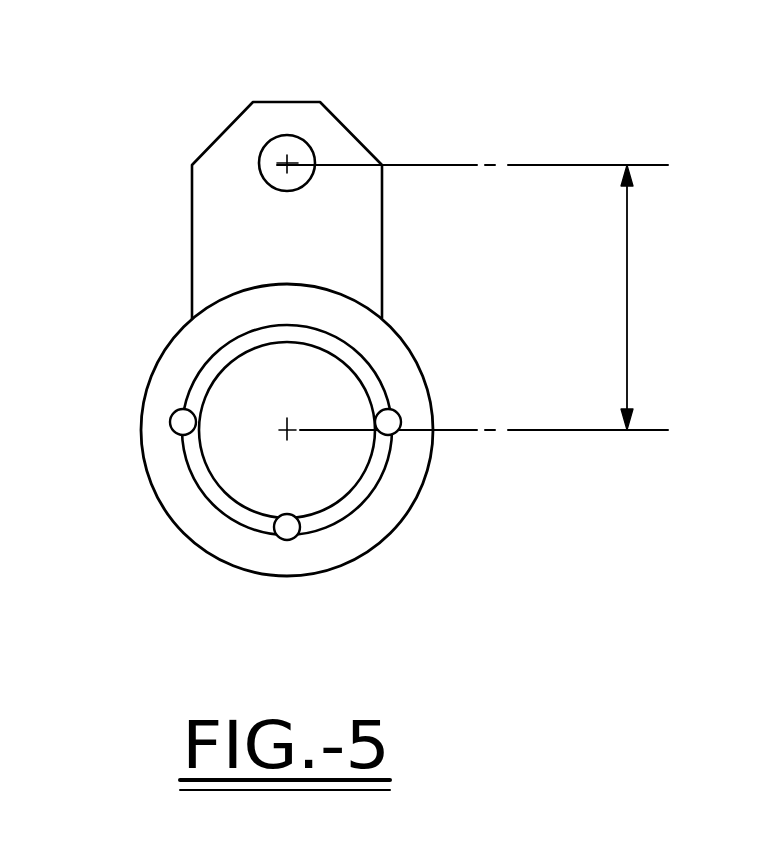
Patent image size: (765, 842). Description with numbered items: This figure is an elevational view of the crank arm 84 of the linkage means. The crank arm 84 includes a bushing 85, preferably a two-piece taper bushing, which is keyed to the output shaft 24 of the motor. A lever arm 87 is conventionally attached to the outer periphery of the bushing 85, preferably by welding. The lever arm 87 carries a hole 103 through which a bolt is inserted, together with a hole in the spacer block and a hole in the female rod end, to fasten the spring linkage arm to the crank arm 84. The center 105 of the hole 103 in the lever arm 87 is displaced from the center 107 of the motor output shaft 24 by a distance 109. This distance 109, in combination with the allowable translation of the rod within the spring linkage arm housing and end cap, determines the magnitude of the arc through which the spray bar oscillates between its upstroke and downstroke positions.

The lever arm 87 is at (247, 108).
The hole 103 is at (300, 146).
The center of hole 105 is at (266, 163).
The distance 109 is at (627, 305).
The crank arm 84 is at (152, 345).
The output shaft 24 is at (217, 400).
The center of motor output shaft 107 is at (283, 434).
The bushing 85 is at (373, 530).